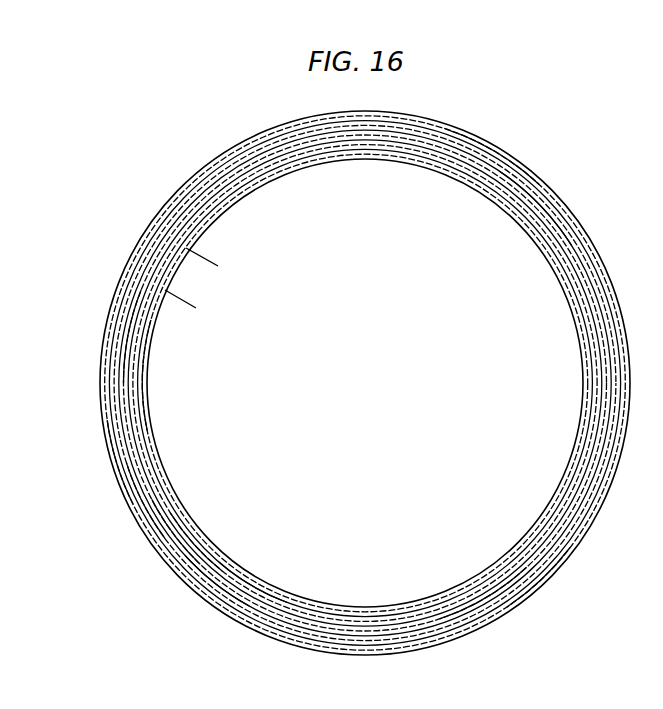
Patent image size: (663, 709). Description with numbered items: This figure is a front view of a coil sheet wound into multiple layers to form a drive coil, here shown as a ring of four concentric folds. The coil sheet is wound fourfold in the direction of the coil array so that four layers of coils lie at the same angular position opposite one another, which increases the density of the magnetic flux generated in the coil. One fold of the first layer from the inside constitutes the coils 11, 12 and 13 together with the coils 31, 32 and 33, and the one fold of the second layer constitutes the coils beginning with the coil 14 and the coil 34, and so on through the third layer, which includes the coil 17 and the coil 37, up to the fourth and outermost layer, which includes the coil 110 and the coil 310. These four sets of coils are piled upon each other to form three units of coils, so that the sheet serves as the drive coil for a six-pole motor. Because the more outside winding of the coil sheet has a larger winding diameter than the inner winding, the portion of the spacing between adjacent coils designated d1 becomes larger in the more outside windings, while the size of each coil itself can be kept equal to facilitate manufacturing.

The coil 11 is at (133, 370).
The coil 31 is at (140, 333).
The coil 12 is at (470, 181).
The coil 32 is at (510, 210).
The coil 13 is at (510, 542).
The coil 33 is at (473, 573).
The coil 14 is at (228, 600).
The coil 34 is at (190, 587).
The coil 17 is at (163, 555).
The coil 37 is at (143, 537).
The coil 110 is at (120, 498).
The coil 310 is at (102, 455).
The spacing between adjacent coils d1 is at (208, 230).